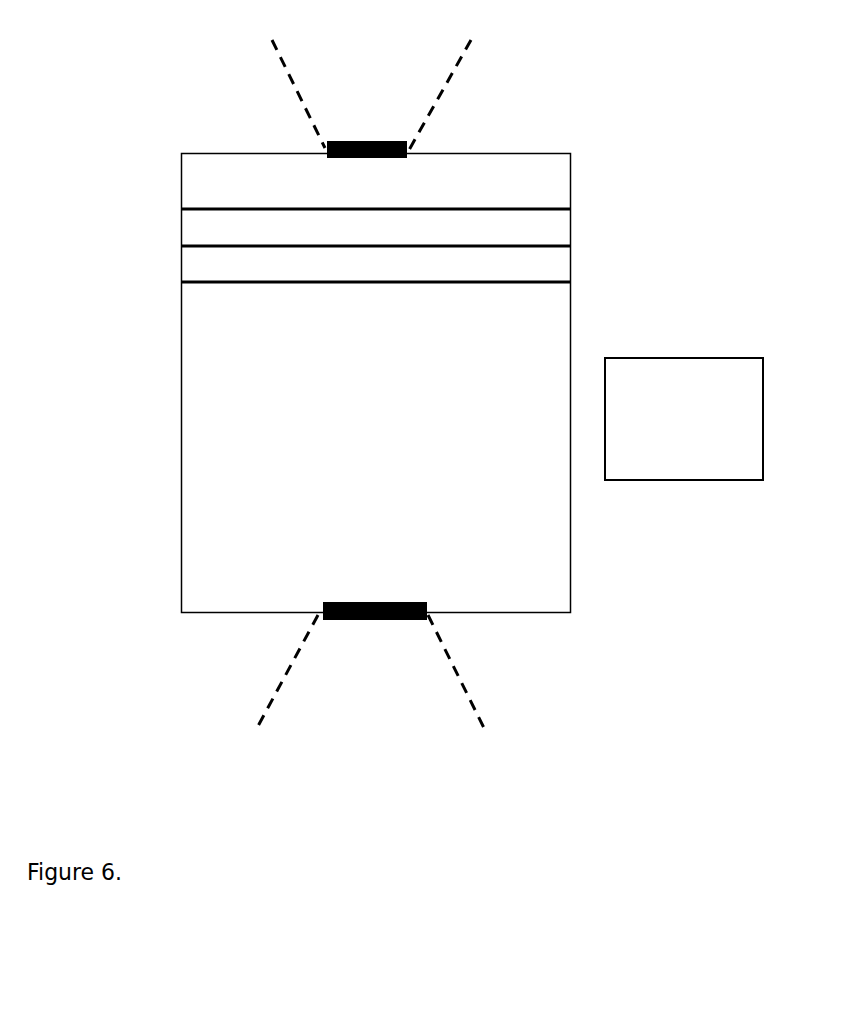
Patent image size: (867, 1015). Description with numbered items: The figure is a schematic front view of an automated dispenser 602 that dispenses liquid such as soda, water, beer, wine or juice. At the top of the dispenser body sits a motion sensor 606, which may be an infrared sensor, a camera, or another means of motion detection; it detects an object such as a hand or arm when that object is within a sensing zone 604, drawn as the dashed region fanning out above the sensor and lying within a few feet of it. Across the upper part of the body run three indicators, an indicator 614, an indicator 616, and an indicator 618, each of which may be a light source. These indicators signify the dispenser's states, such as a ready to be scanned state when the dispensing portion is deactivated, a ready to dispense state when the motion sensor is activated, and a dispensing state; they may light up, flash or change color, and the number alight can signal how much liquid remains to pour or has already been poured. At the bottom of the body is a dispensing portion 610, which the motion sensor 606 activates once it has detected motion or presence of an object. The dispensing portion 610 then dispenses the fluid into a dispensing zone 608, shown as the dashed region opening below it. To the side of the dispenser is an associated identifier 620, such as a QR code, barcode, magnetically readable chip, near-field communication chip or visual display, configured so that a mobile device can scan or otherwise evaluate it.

The automated dispenser 602 is at (181, 397).
The sensing zone 604 is at (465, 103).
The motion sensor 606 is at (369, 158).
The dispensing zone 608 is at (485, 713).
The dispensing portion 610 is at (373, 602).
The indicator 614 is at (181, 209).
The indicator 616 is at (181, 246).
The indicator 618 is at (181, 282).
The identifier 620 is at (684, 419).